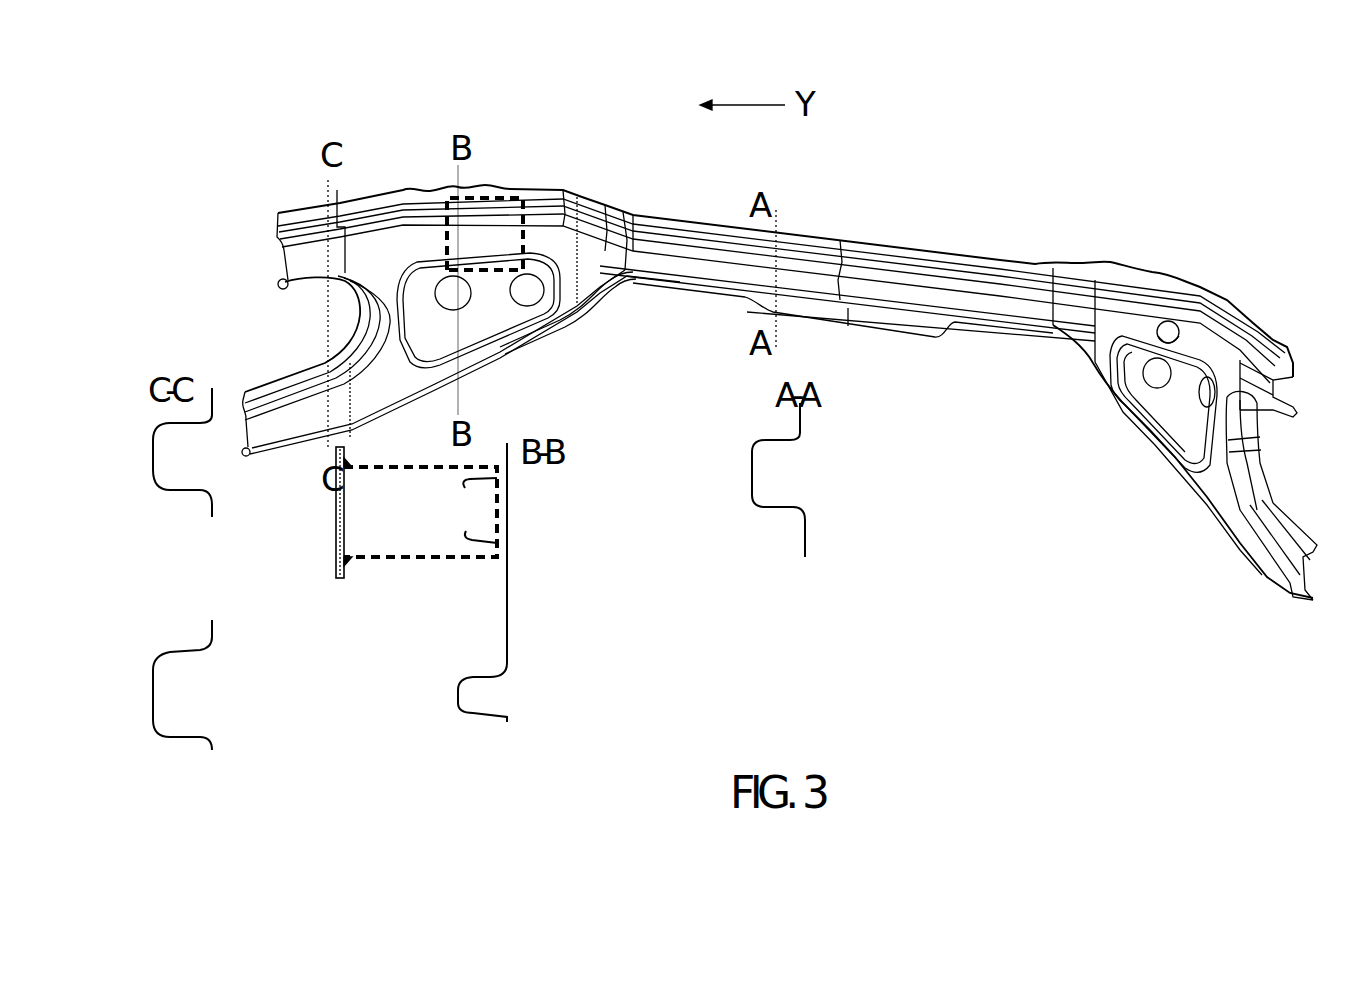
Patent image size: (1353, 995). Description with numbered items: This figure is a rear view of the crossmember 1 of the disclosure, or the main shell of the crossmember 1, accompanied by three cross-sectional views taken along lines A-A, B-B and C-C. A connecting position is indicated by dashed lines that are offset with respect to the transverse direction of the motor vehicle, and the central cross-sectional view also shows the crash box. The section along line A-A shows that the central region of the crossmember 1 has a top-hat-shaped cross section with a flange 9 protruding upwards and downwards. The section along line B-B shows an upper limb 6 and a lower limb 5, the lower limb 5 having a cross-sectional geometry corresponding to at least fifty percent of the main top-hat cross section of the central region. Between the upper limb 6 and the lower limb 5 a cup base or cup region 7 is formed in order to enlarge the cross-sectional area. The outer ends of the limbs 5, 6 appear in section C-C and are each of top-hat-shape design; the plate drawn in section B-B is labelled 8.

The crossmember 1 is at (1003, 228).
The lower limb 5 is at (507, 340).
The upper limb 6 is at (538, 242).
The cup region 7 is at (510, 610).
The reinforcing plate 8 is at (398, 560).
The flange 9 is at (802, 420).